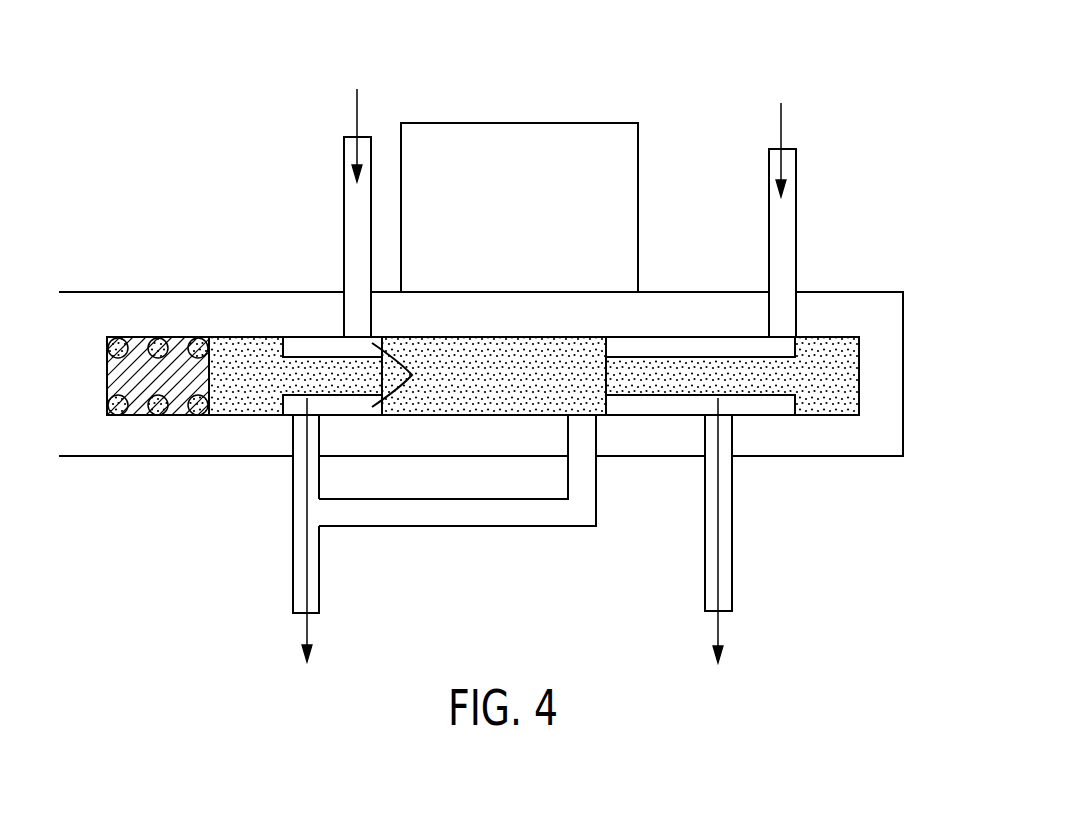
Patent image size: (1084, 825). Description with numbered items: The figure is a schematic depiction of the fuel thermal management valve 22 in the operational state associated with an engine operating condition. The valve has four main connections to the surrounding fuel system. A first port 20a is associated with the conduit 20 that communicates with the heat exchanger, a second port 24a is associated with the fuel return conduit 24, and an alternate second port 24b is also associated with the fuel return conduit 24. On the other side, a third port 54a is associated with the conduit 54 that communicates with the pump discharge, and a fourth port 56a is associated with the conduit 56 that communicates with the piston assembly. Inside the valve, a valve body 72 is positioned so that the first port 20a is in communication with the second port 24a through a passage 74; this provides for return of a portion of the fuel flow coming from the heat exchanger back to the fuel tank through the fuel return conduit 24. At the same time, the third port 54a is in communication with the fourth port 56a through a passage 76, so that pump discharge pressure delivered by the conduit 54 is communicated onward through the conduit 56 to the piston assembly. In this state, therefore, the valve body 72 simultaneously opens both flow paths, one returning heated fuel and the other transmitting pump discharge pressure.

The fuel thermal management valve 22 is at (853, 98).
The conduit 20 is at (344, 212).
The first port 20a is at (344, 325).
The fuel return conduit 24 is at (293, 546).
The second port 24a is at (293, 450).
The alternate second port 24b is at (596, 432).
The conduit 54 is at (796, 212).
The third port 54a is at (796, 325).
The conduit 56 is at (733, 530).
The fourth port 56a is at (733, 446).
The valve body 72 is at (235, 377).
The passage 74 is at (406, 375).
The passage 76 is at (703, 343).